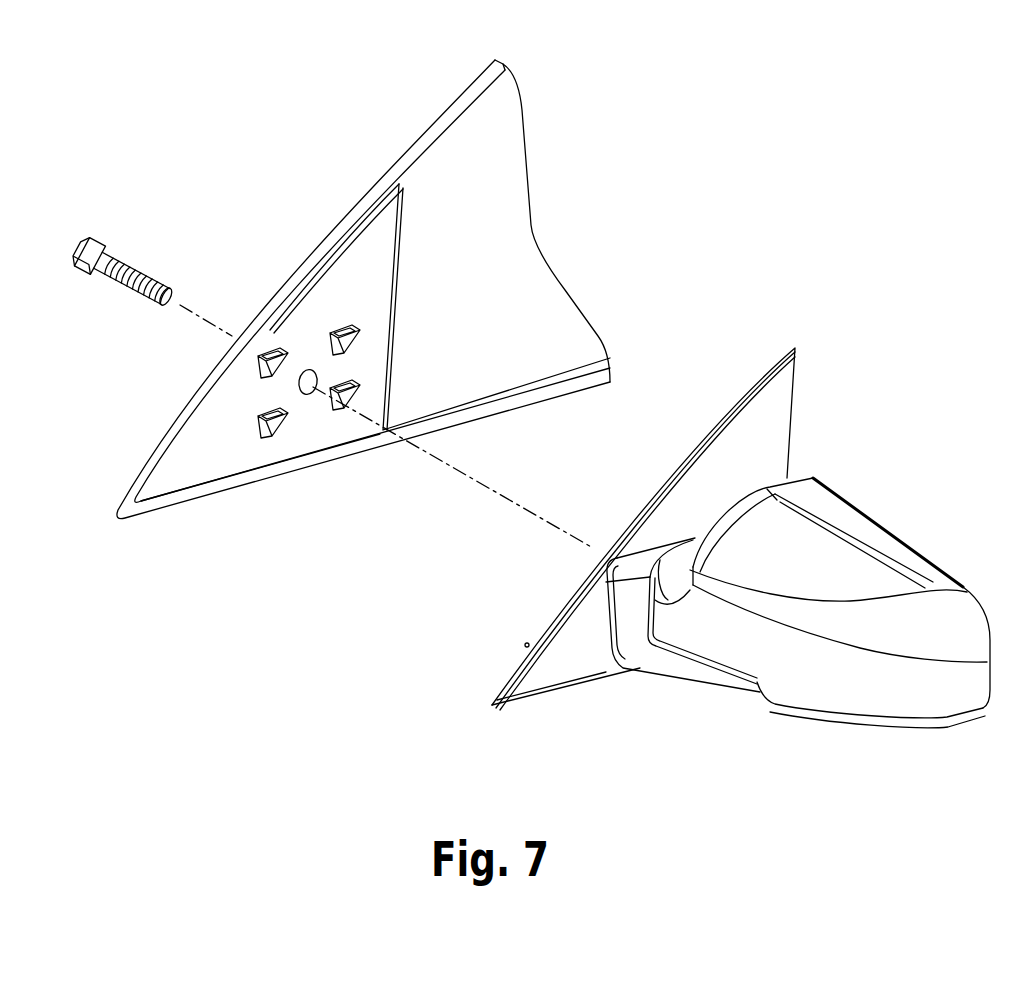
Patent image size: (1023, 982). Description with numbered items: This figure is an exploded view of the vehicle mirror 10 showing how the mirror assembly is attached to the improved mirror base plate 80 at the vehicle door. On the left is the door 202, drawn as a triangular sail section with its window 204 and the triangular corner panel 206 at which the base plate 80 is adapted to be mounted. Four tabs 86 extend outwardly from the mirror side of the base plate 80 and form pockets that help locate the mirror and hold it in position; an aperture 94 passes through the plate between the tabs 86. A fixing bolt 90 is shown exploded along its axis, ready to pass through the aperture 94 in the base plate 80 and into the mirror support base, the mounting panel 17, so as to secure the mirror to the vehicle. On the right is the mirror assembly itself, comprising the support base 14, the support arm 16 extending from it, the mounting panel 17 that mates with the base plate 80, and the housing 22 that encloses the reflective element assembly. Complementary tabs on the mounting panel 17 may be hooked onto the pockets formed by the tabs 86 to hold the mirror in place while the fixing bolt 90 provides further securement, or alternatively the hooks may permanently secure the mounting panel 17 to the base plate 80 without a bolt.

The vehicle mirror 10 is at (749, 555).
The support base 14 is at (764, 450).
The support arm 16 is at (636, 632).
The mounting panel 17 is at (708, 433).
The housing 22 is at (817, 686).
The mirror base plate 80 is at (312, 325).
The tabs 86 is at (343, 335).
The fixing bolt 90 is at (117, 250).
The aperture 94 is at (306, 395).
The door 202 is at (405, 146).
The window 204 is at (490, 298).
The triangular corner panel 206 is at (269, 476).